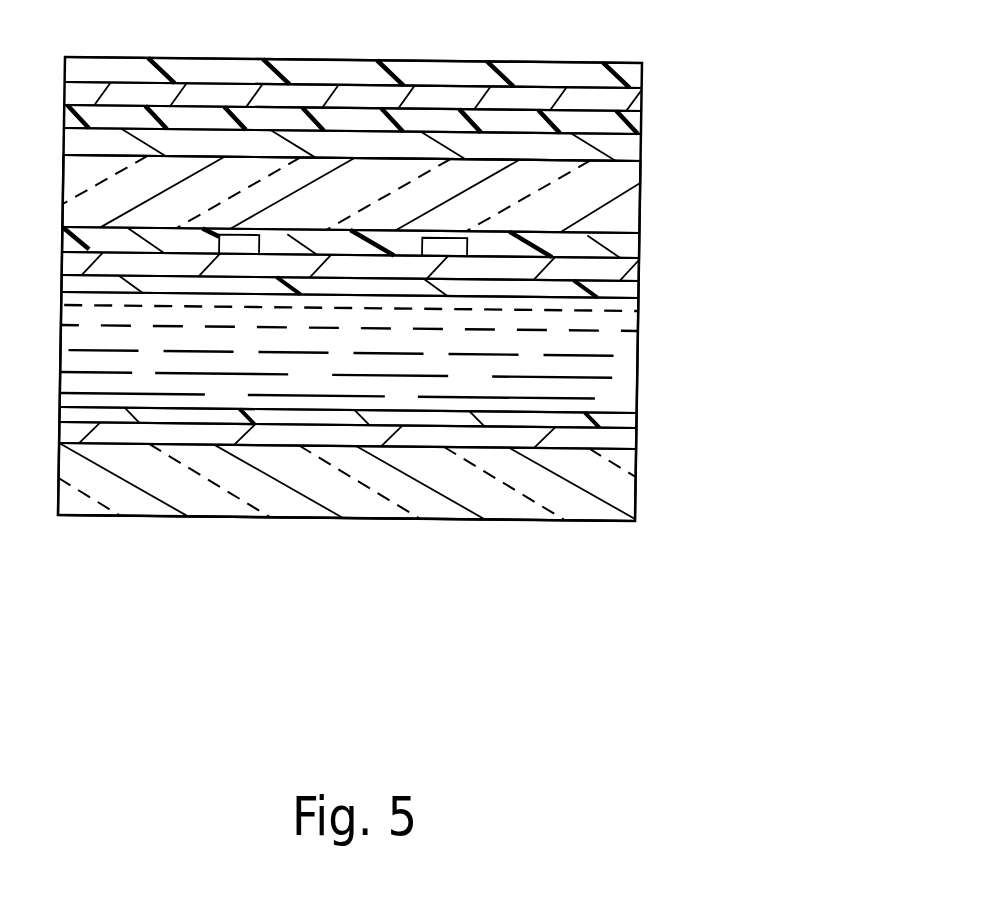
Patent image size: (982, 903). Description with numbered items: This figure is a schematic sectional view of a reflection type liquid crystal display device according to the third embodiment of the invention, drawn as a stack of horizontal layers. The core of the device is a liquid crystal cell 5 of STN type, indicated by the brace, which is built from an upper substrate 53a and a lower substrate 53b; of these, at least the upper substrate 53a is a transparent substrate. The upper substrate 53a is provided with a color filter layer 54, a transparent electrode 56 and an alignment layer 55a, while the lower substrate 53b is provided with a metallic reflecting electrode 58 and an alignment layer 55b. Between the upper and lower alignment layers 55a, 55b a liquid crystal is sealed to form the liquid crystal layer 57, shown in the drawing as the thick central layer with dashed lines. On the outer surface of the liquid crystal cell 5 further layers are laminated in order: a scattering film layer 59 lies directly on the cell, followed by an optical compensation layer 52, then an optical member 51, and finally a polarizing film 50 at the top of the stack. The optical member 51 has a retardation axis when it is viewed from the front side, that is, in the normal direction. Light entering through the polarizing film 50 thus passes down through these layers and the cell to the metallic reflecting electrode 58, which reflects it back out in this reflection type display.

The liquid crystal cell 5 is at (845, 185).
The polarizing film 50 is at (642, 80).
The optical member 51 is at (642, 108).
The optical compensation layer 52 is at (642, 128).
The scattering film layer 59 is at (642, 147).
The upper substrate 53a is at (634, 200).
The color filter layer 54 is at (634, 247).
The transparent electrode 56 is at (637, 283).
The alignment layer 55a is at (638, 302).
The liquid crystal layer 57 is at (620, 368).
The alignment layer 55b is at (634, 423).
The metallic reflecting electrode 58 is at (627, 440).
The lower substrate 53b is at (627, 483).